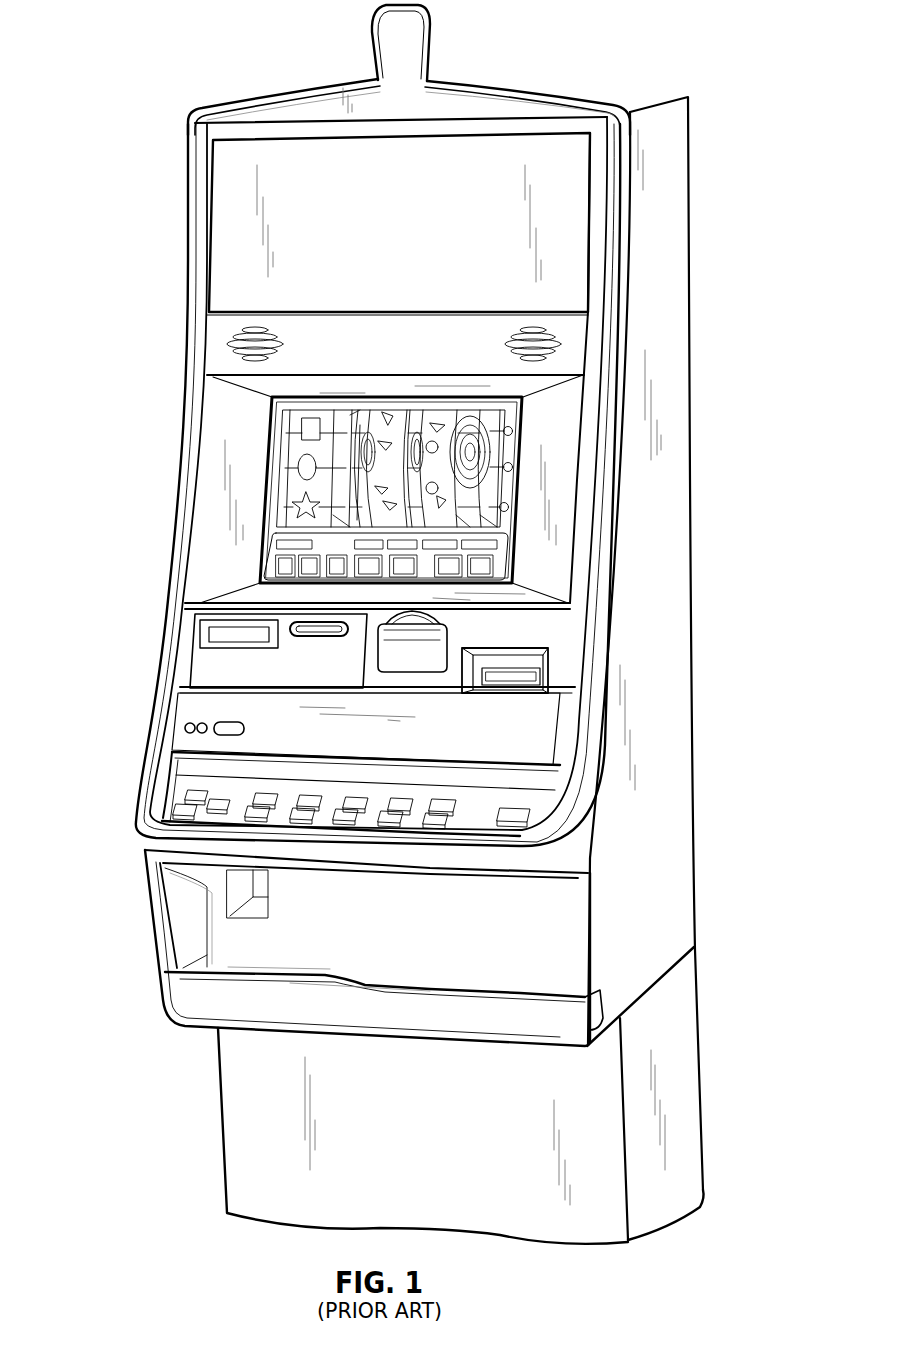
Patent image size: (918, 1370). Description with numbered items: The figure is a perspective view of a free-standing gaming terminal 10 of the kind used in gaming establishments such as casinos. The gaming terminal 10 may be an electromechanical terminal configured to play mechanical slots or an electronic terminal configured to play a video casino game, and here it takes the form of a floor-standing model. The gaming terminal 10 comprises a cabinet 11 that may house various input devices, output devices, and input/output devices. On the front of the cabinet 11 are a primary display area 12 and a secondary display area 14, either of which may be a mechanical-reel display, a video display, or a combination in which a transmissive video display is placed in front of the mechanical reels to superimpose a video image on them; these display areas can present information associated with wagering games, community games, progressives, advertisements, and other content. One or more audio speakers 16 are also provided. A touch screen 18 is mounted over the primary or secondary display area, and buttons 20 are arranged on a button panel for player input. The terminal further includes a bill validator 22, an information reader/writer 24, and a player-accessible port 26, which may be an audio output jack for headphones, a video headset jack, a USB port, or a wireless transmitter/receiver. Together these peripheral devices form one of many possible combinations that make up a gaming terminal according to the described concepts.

The gaming terminal 10 is at (114, 124).
The cabinet 11 is at (683, 246).
The primary display area 12 is at (288, 437).
The secondary display area 14 is at (238, 226).
The audio speakers 16 is at (556, 332).
The touch screen 18 is at (503, 556).
The buttons 20 is at (522, 826).
The bill validator 22 is at (507, 697).
The information reader/writer 24 is at (323, 628).
The player-accessible port 26 is at (231, 722).